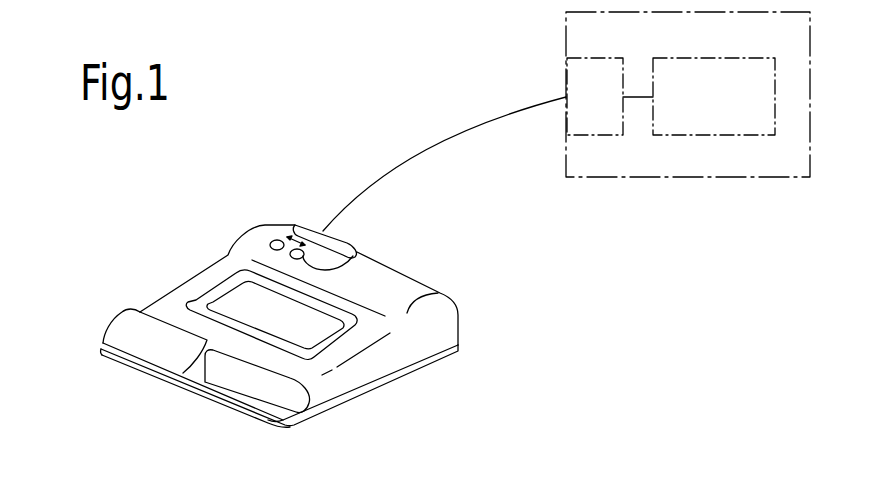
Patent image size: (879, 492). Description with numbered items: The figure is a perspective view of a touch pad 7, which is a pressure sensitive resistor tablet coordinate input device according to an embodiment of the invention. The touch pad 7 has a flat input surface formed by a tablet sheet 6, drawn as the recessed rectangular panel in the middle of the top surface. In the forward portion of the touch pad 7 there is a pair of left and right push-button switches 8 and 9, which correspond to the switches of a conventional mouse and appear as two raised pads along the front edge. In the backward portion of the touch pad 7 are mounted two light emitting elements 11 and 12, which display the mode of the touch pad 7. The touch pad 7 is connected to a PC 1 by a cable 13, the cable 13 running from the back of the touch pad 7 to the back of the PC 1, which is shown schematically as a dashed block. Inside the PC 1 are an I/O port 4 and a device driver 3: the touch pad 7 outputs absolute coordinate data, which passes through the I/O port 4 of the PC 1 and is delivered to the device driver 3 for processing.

The PC 1 is at (566, 22).
The device driver 3 is at (717, 136).
The I/O port 4 is at (603, 136).
The tablet sheet 6 is at (222, 297).
The touch pad 7 is at (415, 343).
The left push-button switch 8 is at (152, 343).
The right push-button switch 9 is at (260, 377).
The light emitting element 11 is at (276, 240).
The light emitting element 12 is at (355, 249).
The cable 13 is at (426, 145).